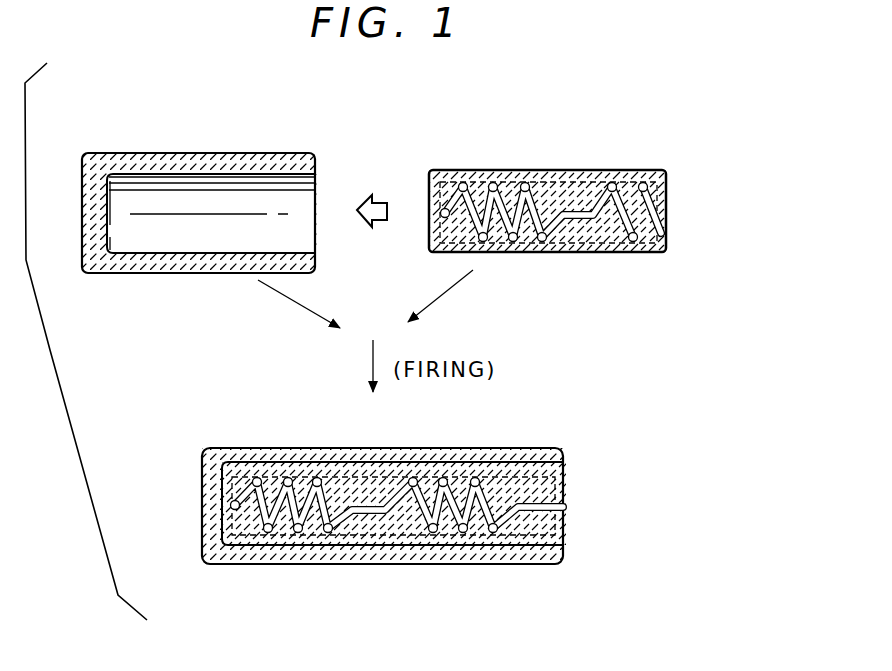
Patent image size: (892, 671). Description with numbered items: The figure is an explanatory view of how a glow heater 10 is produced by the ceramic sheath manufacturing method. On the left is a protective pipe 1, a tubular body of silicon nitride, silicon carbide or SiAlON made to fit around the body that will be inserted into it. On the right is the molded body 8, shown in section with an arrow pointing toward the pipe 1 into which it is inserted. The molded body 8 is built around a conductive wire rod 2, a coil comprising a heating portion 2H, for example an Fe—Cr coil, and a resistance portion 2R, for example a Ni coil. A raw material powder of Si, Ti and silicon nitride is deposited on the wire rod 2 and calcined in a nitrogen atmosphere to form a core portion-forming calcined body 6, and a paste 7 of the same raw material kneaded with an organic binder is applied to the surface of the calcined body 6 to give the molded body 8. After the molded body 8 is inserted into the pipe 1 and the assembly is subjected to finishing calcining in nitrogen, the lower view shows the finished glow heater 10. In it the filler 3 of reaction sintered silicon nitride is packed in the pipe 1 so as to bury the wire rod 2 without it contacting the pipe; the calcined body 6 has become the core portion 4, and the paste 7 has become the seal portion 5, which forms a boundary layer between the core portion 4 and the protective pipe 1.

The protective pipe 1 is at (220, 152).
The conductive wire rod 2 is at (667, 207).
The heating portion 2H is at (492, 182).
The resistance portion 2R is at (650, 254).
The filler 3 is at (529, 468).
The core portion 4 is at (548, 522).
The seal portion 5 is at (490, 478).
The core portion-forming calcined body 6 is at (632, 213).
The paste 7 is at (546, 170).
The molded body 8 is at (637, 164).
The glow heater 10 is at (195, 442).